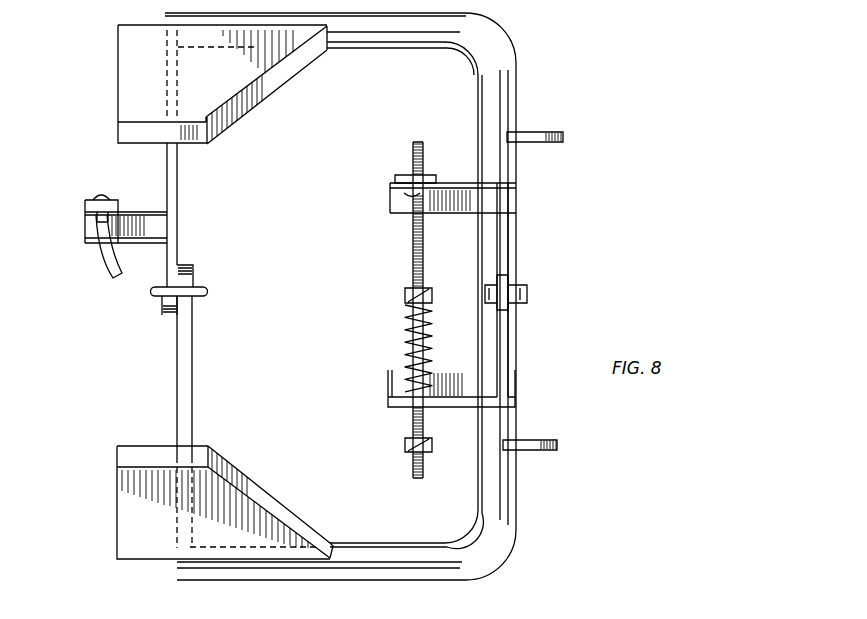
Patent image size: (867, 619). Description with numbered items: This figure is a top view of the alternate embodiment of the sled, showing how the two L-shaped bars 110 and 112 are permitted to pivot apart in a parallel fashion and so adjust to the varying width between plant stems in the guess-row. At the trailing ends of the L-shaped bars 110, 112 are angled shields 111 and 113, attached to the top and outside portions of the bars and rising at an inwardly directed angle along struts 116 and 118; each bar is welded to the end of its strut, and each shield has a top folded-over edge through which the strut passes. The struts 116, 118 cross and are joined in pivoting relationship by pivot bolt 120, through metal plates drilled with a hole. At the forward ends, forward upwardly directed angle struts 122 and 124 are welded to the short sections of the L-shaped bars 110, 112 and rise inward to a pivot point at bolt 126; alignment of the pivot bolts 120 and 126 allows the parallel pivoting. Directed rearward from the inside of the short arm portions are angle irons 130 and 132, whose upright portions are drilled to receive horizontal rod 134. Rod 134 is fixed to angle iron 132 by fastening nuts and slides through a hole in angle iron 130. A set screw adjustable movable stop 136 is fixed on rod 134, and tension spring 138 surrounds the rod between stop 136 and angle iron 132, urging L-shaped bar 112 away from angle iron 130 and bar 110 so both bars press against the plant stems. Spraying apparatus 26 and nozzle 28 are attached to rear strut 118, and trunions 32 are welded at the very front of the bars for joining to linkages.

The spraying apparatus 26 is at (92, 226).
The nozzle 28 is at (100, 196).
The trunions 32 is at (548, 130).
The L-shaped bar 110 is at (448, 525).
The angled shield 111 is at (270, 500).
The L-shaped bar 112 is at (392, 49).
The angled shield 113 is at (274, 77).
The strut 116 is at (190, 380).
The strut 118 is at (176, 196).
The pivot bolt 120 is at (163, 298).
The forward strut 122 is at (510, 353).
The forward strut 124 is at (520, 238).
The pivot bolt 126 is at (528, 292).
The angle iron 130 is at (396, 389).
The angle iron 132 is at (400, 192).
The horizontal rod 134 is at (412, 240).
The movable stop 136 is at (408, 293).
The tension spring 138 is at (405, 350).